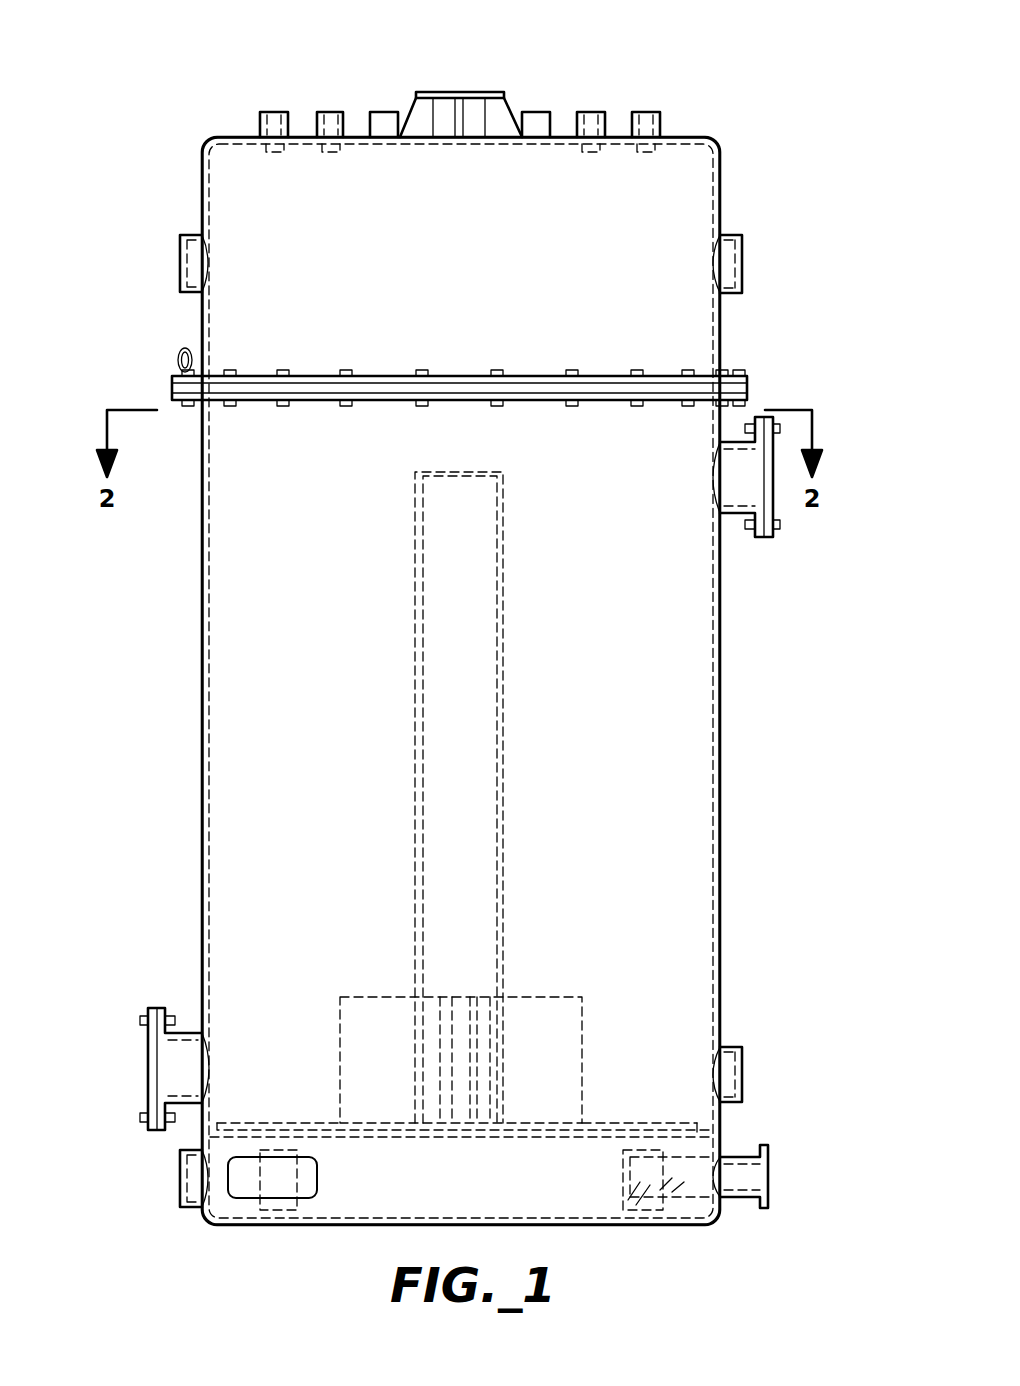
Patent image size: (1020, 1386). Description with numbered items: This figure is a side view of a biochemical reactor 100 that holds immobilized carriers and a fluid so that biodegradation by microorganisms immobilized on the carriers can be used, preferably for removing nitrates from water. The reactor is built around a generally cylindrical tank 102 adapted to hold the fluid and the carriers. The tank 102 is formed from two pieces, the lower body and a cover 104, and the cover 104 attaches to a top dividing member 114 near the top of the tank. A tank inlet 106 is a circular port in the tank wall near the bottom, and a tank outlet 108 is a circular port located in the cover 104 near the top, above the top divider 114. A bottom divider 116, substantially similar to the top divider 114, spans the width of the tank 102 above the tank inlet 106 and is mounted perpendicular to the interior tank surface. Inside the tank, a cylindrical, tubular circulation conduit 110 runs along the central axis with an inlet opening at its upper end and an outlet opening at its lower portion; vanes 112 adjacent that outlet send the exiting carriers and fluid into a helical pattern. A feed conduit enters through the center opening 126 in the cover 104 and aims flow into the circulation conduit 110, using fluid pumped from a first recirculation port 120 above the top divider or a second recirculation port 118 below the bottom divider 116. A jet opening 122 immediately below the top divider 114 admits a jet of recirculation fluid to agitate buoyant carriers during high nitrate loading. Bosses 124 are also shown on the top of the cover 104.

The biochemical reactor 100 is at (666, 48).
The tank 102 is at (215, 705).
The cover 104 is at (218, 175).
The tank inlet 106 is at (182, 1185).
The tank outlet 108 is at (185, 265).
The circulation conduit 110 is at (505, 778).
The vanes 112 is at (582, 1027).
The top dividing member 114 is at (660, 390).
The bottom divider 116 is at (552, 1137).
The second recirculation port 118 is at (768, 1172).
The first recirculation port 120 is at (745, 262).
The jet opening 122 is at (775, 480).
The mounting bosses 124 is at (330, 112).
The center opening 126 is at (460, 92).